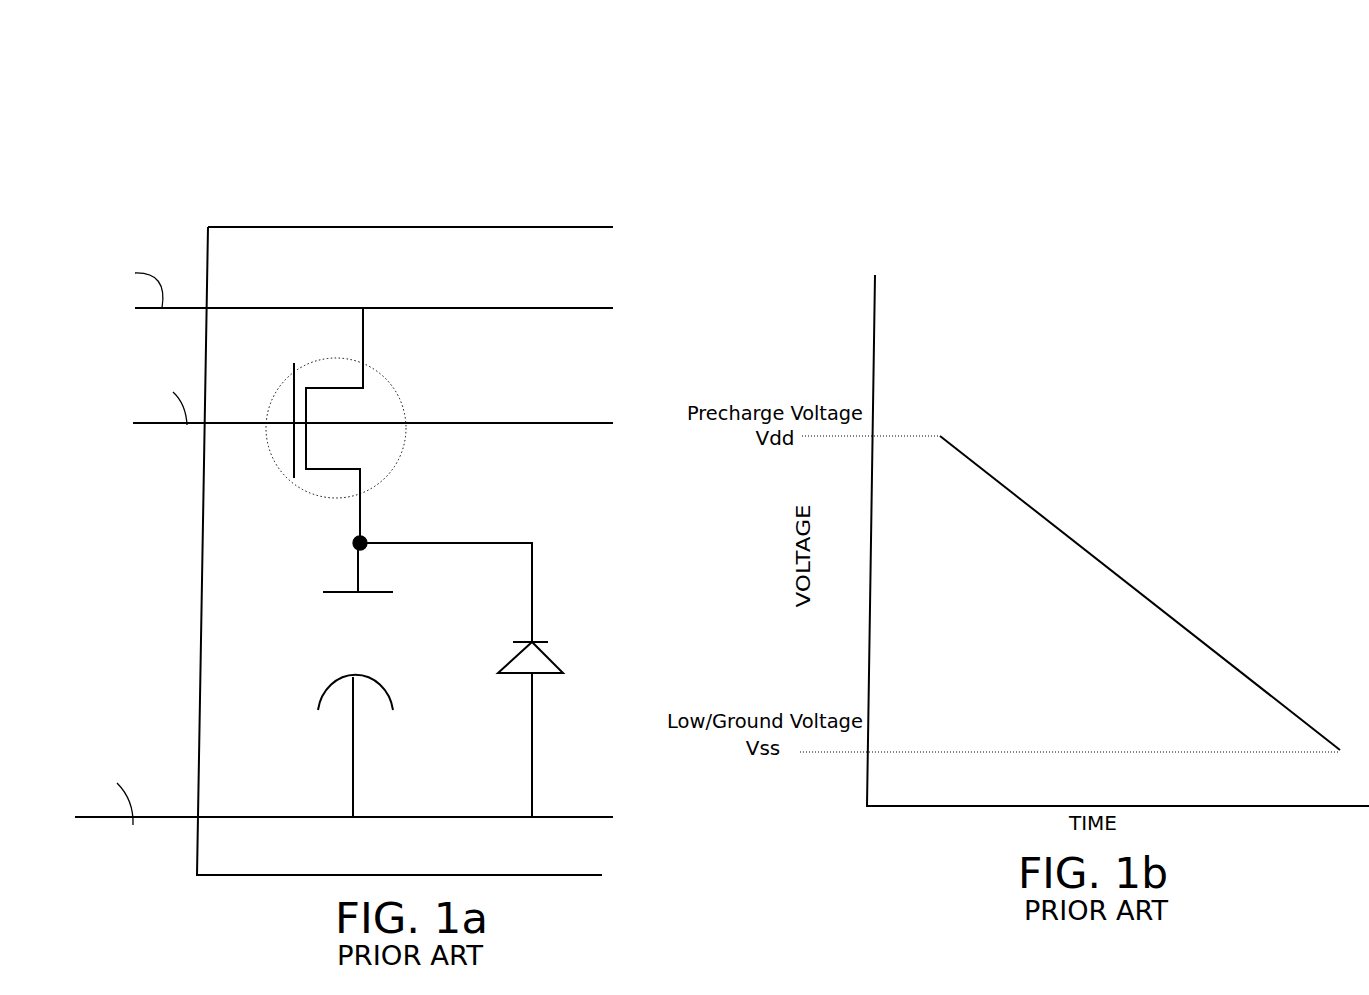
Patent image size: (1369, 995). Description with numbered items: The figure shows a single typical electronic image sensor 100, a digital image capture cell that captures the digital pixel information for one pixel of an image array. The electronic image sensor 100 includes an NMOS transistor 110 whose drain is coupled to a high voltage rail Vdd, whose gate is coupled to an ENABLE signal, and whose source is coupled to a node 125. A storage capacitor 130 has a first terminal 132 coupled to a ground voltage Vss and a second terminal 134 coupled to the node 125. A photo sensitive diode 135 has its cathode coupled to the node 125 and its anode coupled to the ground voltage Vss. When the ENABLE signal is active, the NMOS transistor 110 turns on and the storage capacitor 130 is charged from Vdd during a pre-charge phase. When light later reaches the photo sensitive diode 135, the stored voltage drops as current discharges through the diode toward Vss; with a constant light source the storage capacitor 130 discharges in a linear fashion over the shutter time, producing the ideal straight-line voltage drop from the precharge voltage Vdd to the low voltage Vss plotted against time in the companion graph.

The electronic image sensor 100 is at (442, 207).
The NMOS transistor 110 is at (383, 387).
The node 125 is at (377, 530).
The storage capacitor 130 is at (352, 683).
The first terminal 132 is at (353, 728).
The second terminal 134 is at (357, 568).
The photo sensitive diode 135 is at (577, 638).